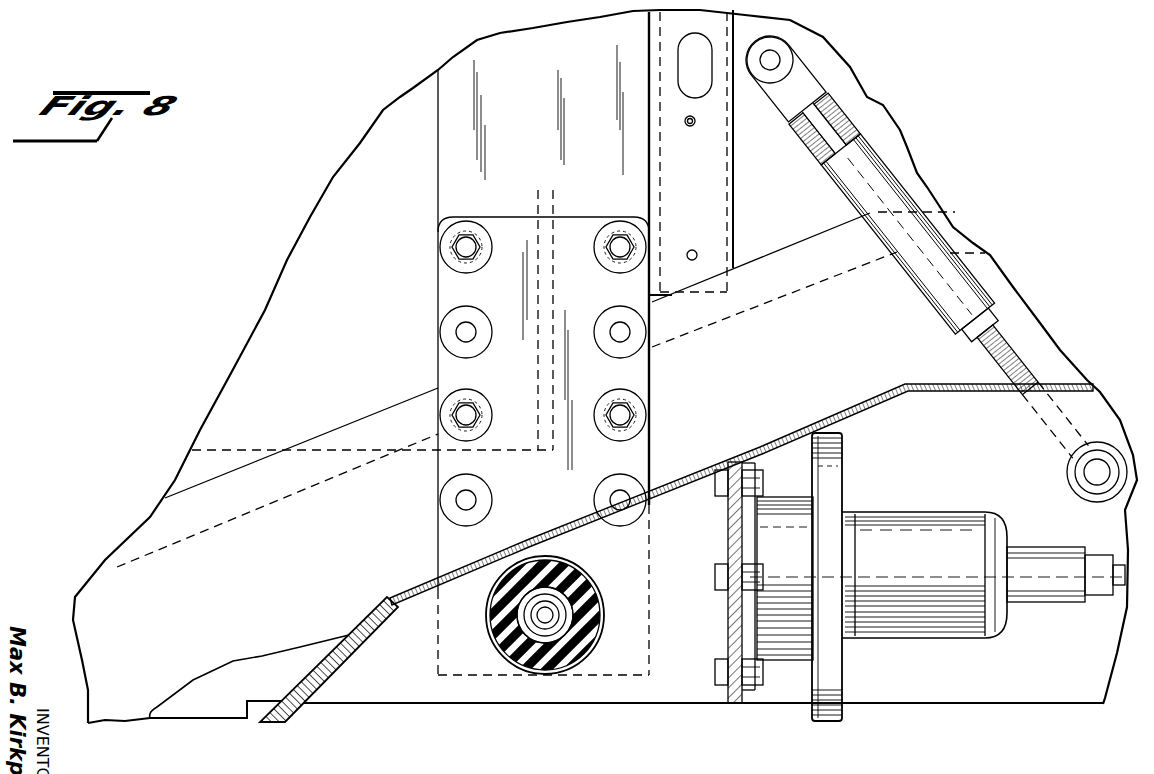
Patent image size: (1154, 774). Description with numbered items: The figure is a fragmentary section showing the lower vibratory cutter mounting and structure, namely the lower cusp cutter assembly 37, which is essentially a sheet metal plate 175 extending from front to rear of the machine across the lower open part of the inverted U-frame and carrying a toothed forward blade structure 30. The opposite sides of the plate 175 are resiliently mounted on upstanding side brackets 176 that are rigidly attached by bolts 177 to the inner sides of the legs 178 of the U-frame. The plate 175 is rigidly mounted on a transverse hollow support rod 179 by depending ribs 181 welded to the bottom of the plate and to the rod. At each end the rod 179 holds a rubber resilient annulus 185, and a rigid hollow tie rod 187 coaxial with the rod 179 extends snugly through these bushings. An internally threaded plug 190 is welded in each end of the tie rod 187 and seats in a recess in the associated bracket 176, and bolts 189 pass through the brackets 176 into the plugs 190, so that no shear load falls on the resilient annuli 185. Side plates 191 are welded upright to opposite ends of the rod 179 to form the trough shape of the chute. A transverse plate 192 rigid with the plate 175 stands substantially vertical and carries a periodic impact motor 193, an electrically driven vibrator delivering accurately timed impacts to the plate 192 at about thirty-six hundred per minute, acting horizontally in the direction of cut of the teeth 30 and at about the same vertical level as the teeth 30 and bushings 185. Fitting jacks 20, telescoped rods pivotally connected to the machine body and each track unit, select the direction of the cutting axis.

The fitting jack 20 is at (905, 200).
The toothed forward blade structure 30 is at (218, 706).
The lower cusp cutter assembly 37 is at (722, 458).
The sheet metal plate 175 is at (530, 535).
The upstanding side bracket 176 is at (452, 467).
The bolt 177 is at (478, 415).
The leg of the U-frame 178 is at (455, 190).
The transverse hollow support rod 179 is at (598, 626).
The depending rib 181 is at (652, 690).
The resilient annulus 185 is at (573, 667).
The tie rod 187 is at (528, 668).
The bolt 189 is at (527, 613).
The internally threaded plug 190 is at (349, 640).
The side plate 191 is at (793, 260).
The transverse plate 192 is at (728, 610).
The periodic impact motor 193 is at (893, 625).